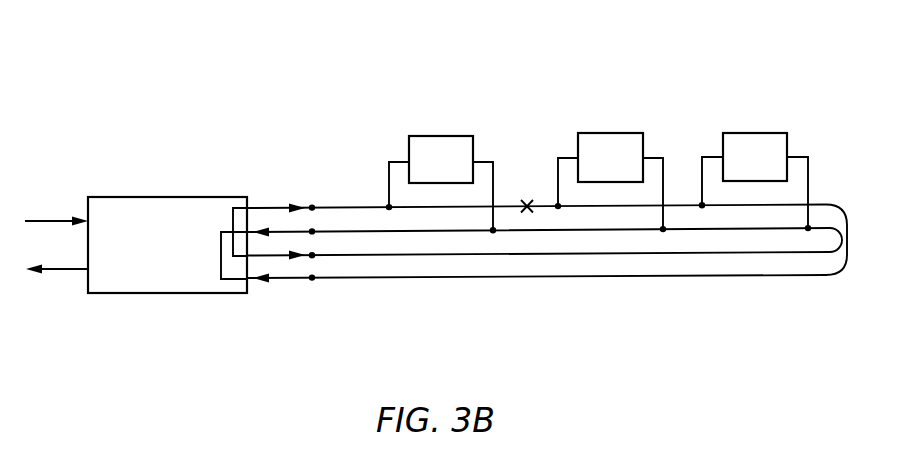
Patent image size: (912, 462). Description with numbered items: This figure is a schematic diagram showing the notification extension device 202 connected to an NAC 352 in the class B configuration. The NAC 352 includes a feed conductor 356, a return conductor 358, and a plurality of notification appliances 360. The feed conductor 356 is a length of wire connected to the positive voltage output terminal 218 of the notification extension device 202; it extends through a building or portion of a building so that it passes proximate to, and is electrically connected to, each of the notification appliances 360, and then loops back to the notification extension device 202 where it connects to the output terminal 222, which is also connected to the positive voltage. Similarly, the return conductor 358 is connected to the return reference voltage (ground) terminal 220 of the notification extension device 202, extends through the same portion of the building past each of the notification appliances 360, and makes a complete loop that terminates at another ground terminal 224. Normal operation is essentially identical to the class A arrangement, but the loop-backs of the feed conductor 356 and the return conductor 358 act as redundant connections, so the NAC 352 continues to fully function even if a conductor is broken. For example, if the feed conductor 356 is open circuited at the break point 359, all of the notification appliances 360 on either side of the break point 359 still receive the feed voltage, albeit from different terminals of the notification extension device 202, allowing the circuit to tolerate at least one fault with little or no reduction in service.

The notification extension device 202 is at (145, 197).
The positive voltage output terminal 218 is at (267, 207).
The return reference voltage terminal 220 is at (281, 231).
The output terminal 222 is at (284, 257).
The ground terminal 224 is at (282, 279).
The NAC 352 is at (655, 100).
The feed conductor 356 is at (343, 207).
The return conductor 358 is at (712, 276).
The break point 359 is at (524, 202).
The notification appliances 360 is at (460, 171).